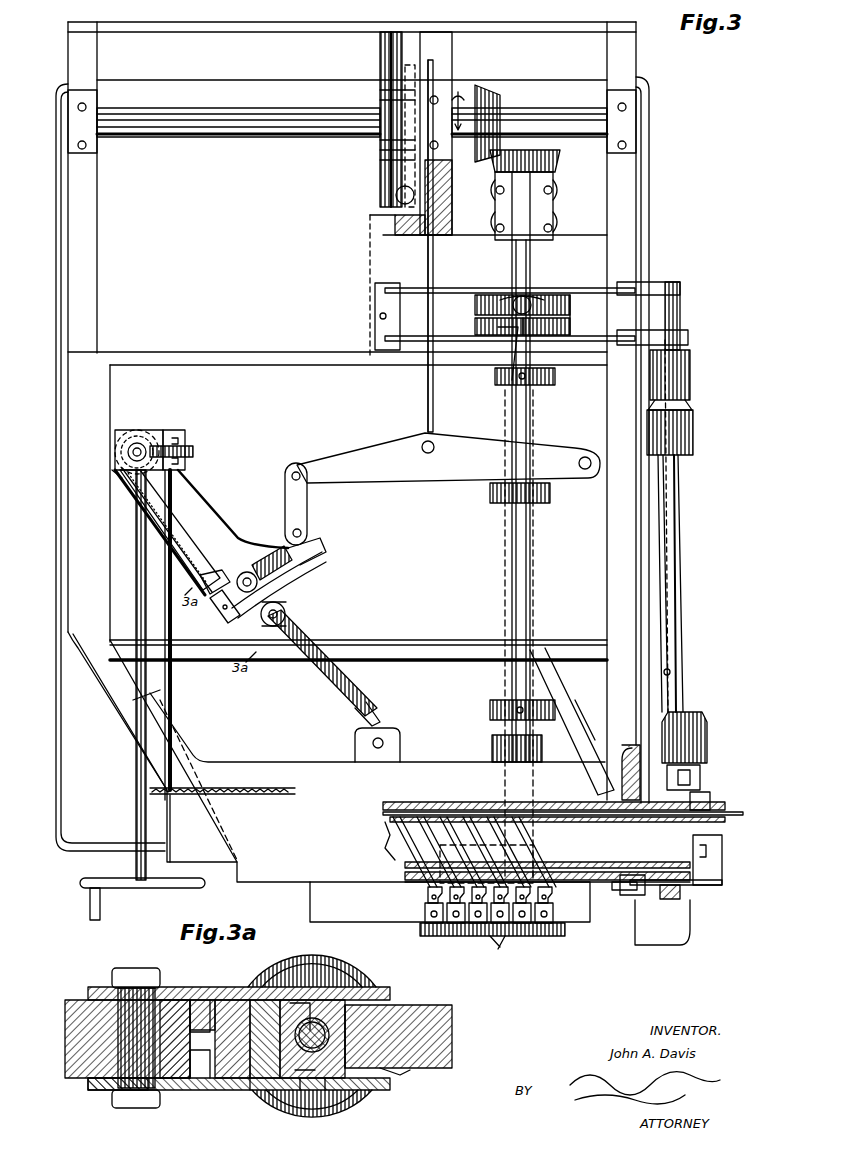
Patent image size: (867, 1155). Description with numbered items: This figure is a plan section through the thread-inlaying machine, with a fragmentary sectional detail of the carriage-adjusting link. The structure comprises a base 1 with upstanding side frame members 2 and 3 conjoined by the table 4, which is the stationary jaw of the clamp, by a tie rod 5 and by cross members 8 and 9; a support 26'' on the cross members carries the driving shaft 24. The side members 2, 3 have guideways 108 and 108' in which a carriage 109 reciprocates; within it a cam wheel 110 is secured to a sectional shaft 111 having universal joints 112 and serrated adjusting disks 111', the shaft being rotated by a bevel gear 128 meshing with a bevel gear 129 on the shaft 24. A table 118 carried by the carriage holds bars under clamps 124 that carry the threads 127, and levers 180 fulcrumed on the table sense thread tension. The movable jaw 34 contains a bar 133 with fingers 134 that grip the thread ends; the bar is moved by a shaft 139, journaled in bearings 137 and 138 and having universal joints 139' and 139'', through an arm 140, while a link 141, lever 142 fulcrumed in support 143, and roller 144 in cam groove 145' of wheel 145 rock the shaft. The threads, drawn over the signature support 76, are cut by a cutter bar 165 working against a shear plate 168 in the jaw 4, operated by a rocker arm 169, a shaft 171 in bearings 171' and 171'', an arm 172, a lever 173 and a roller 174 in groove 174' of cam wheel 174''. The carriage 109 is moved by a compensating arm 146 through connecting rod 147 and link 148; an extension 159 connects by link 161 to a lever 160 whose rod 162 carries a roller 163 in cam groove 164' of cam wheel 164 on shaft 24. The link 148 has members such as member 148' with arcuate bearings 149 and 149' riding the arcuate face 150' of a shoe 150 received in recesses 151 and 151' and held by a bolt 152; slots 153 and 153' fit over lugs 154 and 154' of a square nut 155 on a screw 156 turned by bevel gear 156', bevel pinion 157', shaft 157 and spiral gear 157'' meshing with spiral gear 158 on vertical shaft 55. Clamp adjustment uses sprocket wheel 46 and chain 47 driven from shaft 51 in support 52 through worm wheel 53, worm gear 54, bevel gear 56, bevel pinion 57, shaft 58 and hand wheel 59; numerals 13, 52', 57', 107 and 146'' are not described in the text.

In FIG. 3, the base 1 is at (652, 197).
In FIG. 3, the frame member 2 is at (105, 362).
In FIG. 3, the frame member 3 is at (621, 411).
In FIG. 3, the table 4 is at (676, 940).
In FIG. 3, the tie rod 5 is at (396, 641).
In FIG. 3, the cross member 8 is at (190, 358).
In FIG. 3, the cross member 9 is at (237, 27).
In FIG. 3, the needle 13 is at (552, 910).
In FIG. 3, the shaft 24 is at (216, 136).
In FIG. 3, the bracket 26'' is at (376, 210).
In FIG. 3, the movable jaw 34 is at (622, 761).
In FIG. 3, the sprocket wheel 46 is at (180, 795).
In FIG. 3, the chain 47 is at (245, 797).
In FIG. 3, the shaft 51 is at (174, 678).
In FIG. 3, the support 52 is at (195, 787).
In FIG. 3, the clamp block 52' is at (184, 436).
In FIG. 3, the worm wheel 53 is at (195, 448).
In FIG. 3, the worm gear 54 is at (128, 445).
In FIG. 3, the vertical shaft 55 is at (133, 451).
In FIG. 3, the horizontal bevel gear 56 is at (155, 435).
In FIG. 3, the bevel pinion 57 is at (142, 635).
In FIG. 3, the lever arm 57' is at (233, 509).
In FIG. 3, the shaft 58 is at (136, 544).
In FIG. 3, the hand wheel 59 is at (125, 890).
In FIG. 3, the signature support 76 is at (395, 858).
In FIG. 3, the gear column 107 is at (385, 55).
In FIG. 3, the guideway 108 is at (120, 712).
In FIG. 3, the guideway 108' is at (572, 721).
In FIG. 3, the carriage 109 is at (377, 737).
In FIG. 3, the cam wheel 110 is at (640, 862).
In FIG. 3, the shaft 111 is at (539, 560).
In FIG. 3, the serrated disks 111' is at (540, 493).
In FIG. 3, the universal joints 112 is at (540, 384).
In FIG. 3, the table 118 is at (312, 896).
In FIG. 3, the clamps 124 is at (425, 915).
In FIG. 3, the threads 127 is at (392, 830).
In FIG. 3, the bevel gear 128 is at (556, 168).
In FIG. 3, the bevel gear 129 is at (490, 88).
In FIG. 3, the bar 133 is at (398, 802).
In FIG. 3, the fingers 134 is at (425, 818).
In FIG. 3, the bearing 137 is at (692, 375).
In FIG. 3, the bearing 138 is at (700, 775).
In FIG. 3, the shaft 139 is at (691, 583).
In FIG. 3, the universal joint 139' is at (691, 436).
In FIG. 3, the universal joint 139'' is at (707, 737).
In FIG. 3, the arm 140 is at (710, 796).
In FIG. 3, the link 141 is at (690, 336).
In FIG. 3, the lever 142 is at (455, 340).
In FIG. 3, the support 143 is at (376, 328).
In FIG. 3, the roller 144 is at (505, 330).
In FIG. 3, the wheel 145 is at (565, 325).
In FIG. 3, the cam groove 145' is at (478, 324).
In FIG. 3, the compensating arm 146 is at (170, 530).
In FIG. 3A, the compensating arm 146 is at (416, 1036).
In FIG. 3A, the bar end 146'' is at (267, 1052).
In FIG. 3, the connecting rod 147 is at (322, 668).
In FIG. 3A, the connecting rod 147 is at (72, 1043).
In FIG. 3, the link 148 is at (293, 606).
In FIG. 3A, the link 148 is at (239, 1101).
In FIG. 3A, the link member 148' is at (239, 981).
In FIG. 3A, the arcuate bearing 149 is at (178, 1017).
In FIG. 3A, the arcuate bearing 149' is at (206, 1059).
In FIG. 3A, the shoe 150 is at (238, 1015).
In FIG. 3, the arcuate face 150' is at (290, 585).
In FIG. 3A, the arcuate face 150' is at (218, 986).
In FIG. 3A, the recess 151 is at (275, 1008).
In FIG. 3A, the recess 151' is at (252, 1096).
In FIG. 3A, the bolt 152 is at (130, 975).
In FIG. 3A, the elongated slot 153 is at (312, 960).
In FIG. 3A, the elongated slot 153' is at (312, 1114).
In FIG. 3, the lug 154 is at (242, 569).
In FIG. 3A, the lug 154 is at (335, 1010).
In FIG. 3A, the lug 154' is at (348, 1099).
In FIG. 3A, the square nut 155 is at (350, 1065).
In FIG. 3, the screw 156 is at (271, 558).
In FIG. 3A, the screw 156 is at (350, 998).
In FIG. 3, the bevel gear 156' is at (234, 626).
In FIG. 3A, the bevel gear 156' is at (324, 1104).
In FIG. 3, the shaft 157 is at (167, 530).
In FIG. 3, the bevel pinion 157' is at (215, 570).
In FIG. 3A, the bevel pinion 157' is at (423, 1080).
In FIG. 3, the spiral gear 157'' is at (97, 477).
In FIG. 3, the spiral gear 158 is at (134, 428).
In FIG. 3, the extension 159 is at (310, 550).
In FIG. 3, the lever 160 is at (448, 458).
In FIG. 3, the link 161 is at (308, 508).
In FIG. 3, the rod 162 is at (433, 430).
In FIG. 3, the roller 163 is at (395, 192).
In FIG. 3, the cam wheel 164 is at (374, 151).
In FIG. 3, the cam groove 164' is at (374, 93).
In FIG. 3, the cutter bar 165 is at (621, 885).
In FIG. 3, the shear plate 168 is at (618, 896).
In FIG. 3, the rocker arm 169 is at (723, 886).
In FIG. 3, the shaft 171 is at (694, 526).
In FIG. 3, the bearing 171' is at (724, 860).
In FIG. 3, the bearing 171'' is at (697, 316).
In FIG. 3, the arm 172 is at (682, 288).
In FIG. 3, the lever 173 is at (585, 315).
In FIG. 3, the roller 174 is at (511, 290).
In FIG. 3, the cam groove 174' is at (540, 288).
In FIG. 3, the cam wheel 174'' is at (551, 286).
In FIG. 3, the levers 180 is at (504, 950).